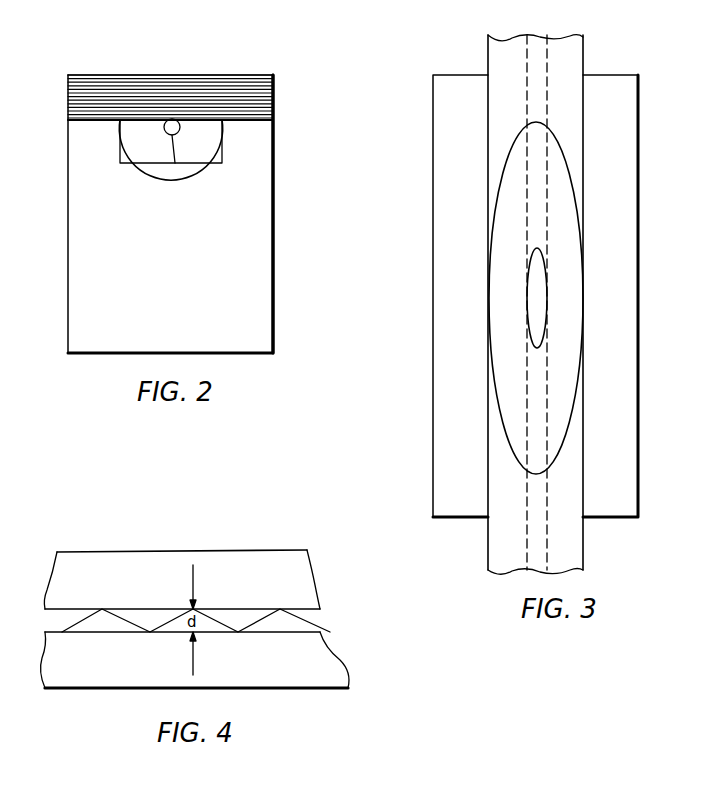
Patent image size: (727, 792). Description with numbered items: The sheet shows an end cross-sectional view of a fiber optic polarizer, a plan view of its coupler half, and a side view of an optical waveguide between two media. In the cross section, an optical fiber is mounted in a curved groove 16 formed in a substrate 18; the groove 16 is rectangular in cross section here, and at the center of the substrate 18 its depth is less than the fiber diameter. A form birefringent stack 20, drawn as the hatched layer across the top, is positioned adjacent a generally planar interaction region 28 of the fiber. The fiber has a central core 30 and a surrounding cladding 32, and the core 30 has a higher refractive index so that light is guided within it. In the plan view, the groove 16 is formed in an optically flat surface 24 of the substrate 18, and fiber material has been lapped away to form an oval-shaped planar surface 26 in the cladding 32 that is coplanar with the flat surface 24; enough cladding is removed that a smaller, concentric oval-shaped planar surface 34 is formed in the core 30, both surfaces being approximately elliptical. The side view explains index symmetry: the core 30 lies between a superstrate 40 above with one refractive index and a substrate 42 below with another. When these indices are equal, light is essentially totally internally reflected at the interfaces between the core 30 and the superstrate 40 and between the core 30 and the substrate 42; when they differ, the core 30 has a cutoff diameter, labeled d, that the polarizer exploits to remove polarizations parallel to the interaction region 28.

In FIG. 2, the curved groove 16 is at (170, 214).
In FIG. 2, the substrate 18 is at (275, 248).
In FIG. 2, the form birefringent stack 20 is at (116, 75).
In FIG. 3, the optically flat surface 24 is at (440, 330).
In FIG. 3, the oval-shaped planar surface in cladding 26 is at (567, 167).
In FIG. 2, the interaction region 28 is at (174, 119).
In FIG. 2, the core 30 is at (175, 163).
In FIG. 3, the core 30 is at (525, 93).
In FIG. 4, the core 30 is at (65, 609).
In FIG. 2, the cladding 32 is at (213, 146).
In FIG. 3, the cladding 32 is at (583, 53).
In FIG. 3, the oval-shaped planar surface in core 34 is at (548, 300).
In FIG. 4, the superstrate 40 is at (257, 551).
In FIG. 4, the substrate 42 is at (303, 688).